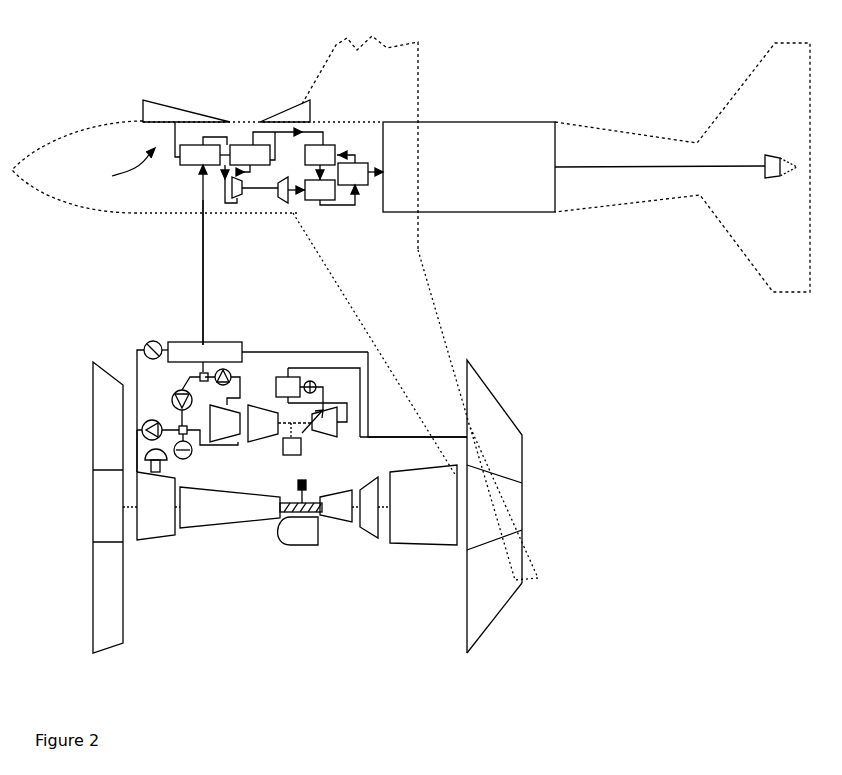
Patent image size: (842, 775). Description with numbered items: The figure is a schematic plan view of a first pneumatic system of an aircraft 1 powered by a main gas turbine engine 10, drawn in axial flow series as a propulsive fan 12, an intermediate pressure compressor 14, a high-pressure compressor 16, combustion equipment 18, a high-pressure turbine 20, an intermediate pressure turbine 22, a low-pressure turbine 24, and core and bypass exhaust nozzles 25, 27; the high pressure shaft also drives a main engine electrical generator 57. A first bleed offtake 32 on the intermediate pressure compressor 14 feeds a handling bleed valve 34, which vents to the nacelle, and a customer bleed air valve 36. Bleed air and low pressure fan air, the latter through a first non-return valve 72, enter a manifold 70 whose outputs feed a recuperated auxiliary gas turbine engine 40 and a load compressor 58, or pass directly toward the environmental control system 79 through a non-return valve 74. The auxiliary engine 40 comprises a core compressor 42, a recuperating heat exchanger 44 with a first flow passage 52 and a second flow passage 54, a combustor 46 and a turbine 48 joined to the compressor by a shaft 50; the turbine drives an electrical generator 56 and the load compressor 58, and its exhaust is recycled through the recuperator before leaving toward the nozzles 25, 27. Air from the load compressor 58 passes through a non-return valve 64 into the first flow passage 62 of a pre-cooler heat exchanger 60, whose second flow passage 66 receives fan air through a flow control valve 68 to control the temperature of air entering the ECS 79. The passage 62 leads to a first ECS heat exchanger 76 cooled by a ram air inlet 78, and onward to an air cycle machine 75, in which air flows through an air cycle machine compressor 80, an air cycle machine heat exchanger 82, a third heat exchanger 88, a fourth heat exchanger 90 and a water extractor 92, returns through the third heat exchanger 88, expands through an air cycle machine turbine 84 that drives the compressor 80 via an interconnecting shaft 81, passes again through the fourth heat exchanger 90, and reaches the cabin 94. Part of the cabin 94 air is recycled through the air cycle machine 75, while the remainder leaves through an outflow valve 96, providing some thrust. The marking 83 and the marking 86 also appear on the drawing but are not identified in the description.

The aircraft 1 is at (632, 287).
The main gas turbine engine 10 is at (334, 646).
The propulsive fan 12 is at (125, 613).
The intermediate pressure compressor 14 is at (157, 541).
The high-pressure compressor 16 is at (210, 528).
The combustion equipment 18 is at (294, 545).
The high-pressure turbine 20 is at (337, 523).
The intermediate pressure turbine 22 is at (367, 539).
The low-pressure turbine 24 is at (401, 545).
The core exhaust nozzle 25 is at (505, 482).
The bypass exhaust nozzle 27 is at (502, 612).
The first bleed offtake 32 is at (137, 473).
The handling bleed valve 34 is at (145, 453).
The customer bleed air valve 36 is at (192, 455).
The recuperated auxiliary gas turbine engine 40 is at (380, 422).
The core compressor 42 is at (263, 440).
The heat exchanger 44 is at (286, 377).
The combustor 46 is at (313, 381).
The turbine 48 is at (361, 370).
The shaft 50 is at (318, 440).
The first flow passage 52 is at (263, 405).
The second flow passage 54 is at (370, 402).
The electrical generator 56 is at (299, 455).
The main gas turbine engine electrical generator 57 is at (338, 491).
The load compressor 58 is at (221, 440).
The pre-cooler heat exchanger 60 is at (185, 342).
The first flow passage 62 is at (204, 290).
The non-return valve 64 is at (225, 369).
The second flow passage 66 is at (348, 352).
The flow control valve 68 is at (148, 342).
The manifold 70 is at (172, 397).
The first non-return valve 72 is at (142, 426).
The non-return valve 74 is at (143, 348).
The air cycle machine 75 is at (231, 213).
The first ECS heat exchanger 76 is at (175, 163).
The ram air inlet 78 is at (143, 101).
The Environmental Control System 79 is at (200, 173).
The air cycle machine compressor 80 is at (263, 193).
The interconnecting shaft 81 is at (290, 203).
The air cycle machine heat exchanger 82 is at (243, 145).
The airflow 83 is at (114, 166).
The air cycle machine turbine 84 is at (318, 202).
The wing 86 is at (292, 107).
The third heat exchanger 88 is at (325, 144).
The fourth heat exchanger 90 is at (338, 200).
The water extractor 92 is at (365, 163).
The cabin 94 is at (516, 213).
The outflow valve 96 is at (770, 180).